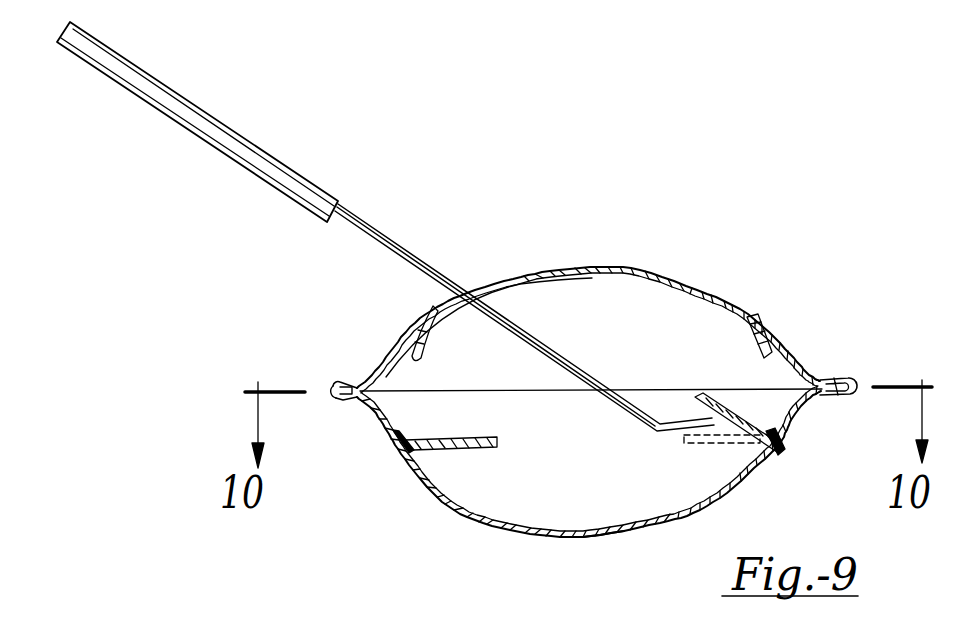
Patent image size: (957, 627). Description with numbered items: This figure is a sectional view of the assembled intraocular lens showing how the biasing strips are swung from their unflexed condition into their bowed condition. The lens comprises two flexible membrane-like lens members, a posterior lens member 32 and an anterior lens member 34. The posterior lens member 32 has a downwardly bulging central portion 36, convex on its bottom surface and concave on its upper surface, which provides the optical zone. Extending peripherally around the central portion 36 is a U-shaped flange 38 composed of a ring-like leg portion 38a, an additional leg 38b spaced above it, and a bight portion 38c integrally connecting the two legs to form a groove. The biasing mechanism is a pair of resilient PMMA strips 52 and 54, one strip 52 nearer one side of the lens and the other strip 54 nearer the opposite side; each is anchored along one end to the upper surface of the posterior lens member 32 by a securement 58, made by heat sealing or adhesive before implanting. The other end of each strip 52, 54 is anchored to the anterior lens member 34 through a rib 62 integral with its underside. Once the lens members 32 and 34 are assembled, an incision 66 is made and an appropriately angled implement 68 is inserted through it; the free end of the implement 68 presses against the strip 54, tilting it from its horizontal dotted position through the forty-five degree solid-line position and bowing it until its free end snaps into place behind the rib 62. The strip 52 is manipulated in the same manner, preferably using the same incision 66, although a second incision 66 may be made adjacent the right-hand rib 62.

The posterior lens member 32 is at (467, 517).
The anterior lens member 34 is at (636, 269).
The central portion 36 is at (615, 534).
The U-shaped flange 38 is at (831, 378).
The leg portion 38a is at (347, 400).
The leg 38b is at (340, 382).
The bight portion 38c is at (332, 392).
The resilient strip 52 is at (485, 448).
The resilient strip 54 is at (700, 397).
The securement 58 is at (400, 436).
The rib 62 is at (420, 352).
The incision 66 is at (510, 283).
The implement 68 is at (371, 228).